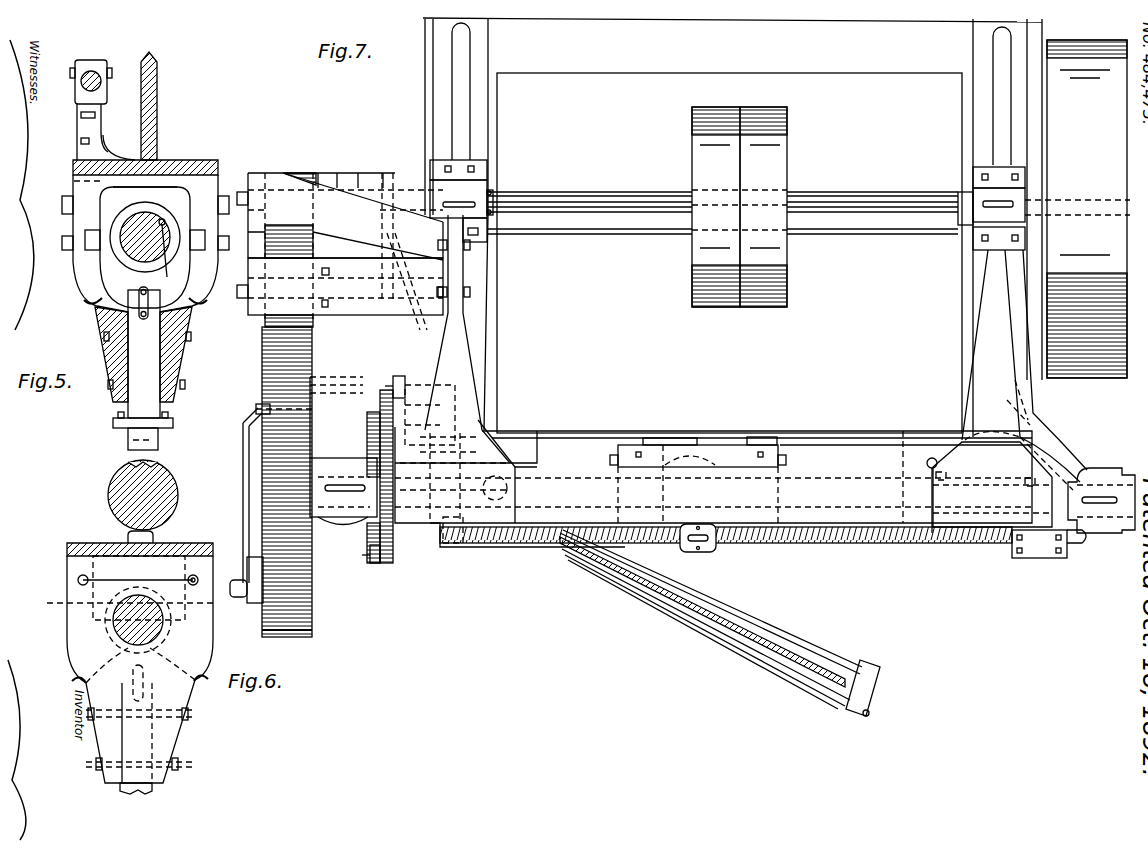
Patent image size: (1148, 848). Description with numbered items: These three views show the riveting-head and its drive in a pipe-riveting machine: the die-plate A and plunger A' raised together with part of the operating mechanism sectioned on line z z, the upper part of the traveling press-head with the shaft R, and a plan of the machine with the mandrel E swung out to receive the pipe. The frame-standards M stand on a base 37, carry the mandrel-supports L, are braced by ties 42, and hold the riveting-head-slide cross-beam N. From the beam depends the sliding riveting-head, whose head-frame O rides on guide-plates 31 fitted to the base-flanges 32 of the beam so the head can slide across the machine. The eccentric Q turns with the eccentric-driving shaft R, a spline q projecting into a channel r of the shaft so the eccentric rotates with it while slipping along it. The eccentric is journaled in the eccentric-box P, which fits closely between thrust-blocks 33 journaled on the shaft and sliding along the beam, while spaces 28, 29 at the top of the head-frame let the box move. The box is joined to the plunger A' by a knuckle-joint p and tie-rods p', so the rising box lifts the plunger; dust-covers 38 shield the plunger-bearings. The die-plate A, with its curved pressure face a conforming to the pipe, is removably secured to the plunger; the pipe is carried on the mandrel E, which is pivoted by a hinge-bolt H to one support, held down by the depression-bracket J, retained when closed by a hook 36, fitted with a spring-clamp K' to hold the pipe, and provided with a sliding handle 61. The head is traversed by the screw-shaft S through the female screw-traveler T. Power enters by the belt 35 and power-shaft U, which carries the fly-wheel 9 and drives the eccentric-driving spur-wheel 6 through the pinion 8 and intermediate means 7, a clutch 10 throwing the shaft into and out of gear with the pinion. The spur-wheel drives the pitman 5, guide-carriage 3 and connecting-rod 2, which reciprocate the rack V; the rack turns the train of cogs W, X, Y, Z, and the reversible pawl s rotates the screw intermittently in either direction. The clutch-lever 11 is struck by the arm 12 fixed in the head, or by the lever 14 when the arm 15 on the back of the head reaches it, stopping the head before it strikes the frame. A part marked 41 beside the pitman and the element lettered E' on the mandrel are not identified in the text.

In FIG. 5, the riveting-head-slide cross-beam N is at (158, 84).
In FIG. 6, the riveting-head-slide cross-beam N is at (148, 546).
In FIG. 7, the riveting-head-slide cross-beam N is at (830, 470).
In FIG. 5, the screw-shaft S is at (100, 68).
In FIG. 7, the screw-shaft S is at (883, 545).
In FIG. 5, the female screw-traveler T is at (102, 80).
In FIG. 7, the female screw-traveler T is at (732, 555).
In FIG. 5, the guide-plates 31 is at (158, 206).
In FIG. 7, the guide-plates 31 is at (712, 456).
In FIG. 5, the base-flanges 32 is at (167, 160).
In FIG. 6, the base-flanges 32 is at (117, 542).
In FIG. 5, the space 28 is at (87, 190).
In FIG. 5, the thrust-blocks 33 is at (115, 183).
In FIG. 6, the thrust-blocks 33 is at (173, 567).
In FIG. 5, the eccentric Q is at (153, 212).
In FIG. 6, the eccentric Q is at (122, 605).
In FIG. 5, the spline q is at (165, 222).
In FIG. 6, the spline q is at (225, 605).
In FIG. 5, the head-frame O is at (207, 358).
In FIG. 6, the head-frame O is at (140, 675).
In FIG. 5, the eccentric-driving shaft R is at (130, 243).
In FIG. 6, the eccentric-driving shaft R is at (138, 620).
In FIG. 7, the eccentric-driving shaft R is at (847, 545).
In FIG. 5, the eccentric-box P is at (145, 243).
In FIG. 6, the eccentric-box P is at (78, 580).
In FIG. 5, the knuckle-joint p is at (153, 302).
In FIG. 6, the knuckle-joint p is at (149, 680).
In FIG. 5, the tie-rods p' is at (116, 354).
In FIG. 6, the tie-rods p' is at (140, 665).
In FIG. 5, the dust-covers 38 is at (84, 298).
In FIG. 6, the dust-covers 38 is at (74, 681).
In FIG. 5, the channel r is at (170, 257).
In FIG. 5, the space 29 is at (196, 280).
In FIG. 5, the plunger A' is at (144, 354).
In FIG. 6, the plunger A' is at (187, 743).
In FIG. 5, the die-plate A is at (158, 427).
In FIG. 5, the pressure face a is at (158, 444).
In FIG. 5, the mandrel E is at (122, 495).
In FIG. 5, the bar E' is at (120, 448).
In FIG. 7, the bar E' is at (711, 619).
In FIG. 6, the ties 42 is at (198, 579).
In FIG. 7, the ties 42 is at (612, 458).
In FIG. 7, the base 37 is at (732, 227).
In FIG. 7, the frame-standards M is at (465, 328).
In FIG. 7, the power-shaft U is at (618, 195).
In FIG. 7, the belt 35 is at (700, 310).
In FIG. 7, the fly-wheel 9 is at (1087, 209).
In FIG. 7, the pinion 8 is at (302, 171).
In FIG. 7, the clutch 10 is at (367, 171).
In FIG. 7, the intermediate means 7 is at (263, 338).
In FIG. 7, the guide-carriage 3 is at (258, 410).
In FIG. 7, the pitman 5 is at (243, 497).
In FIG. 7, the bracket 41 is at (252, 600).
In FIG. 7, the eccentric-driving spur-wheel 6 is at (298, 638).
In FIG. 7, the connecting-rod 2 is at (330, 412).
In FIG. 7, the cog W is at (367, 443).
In FIG. 7, the cog Y is at (388, 563).
In FIG. 7, the cog Z is at (365, 527).
In FIG. 7, the reversible pawl s is at (367, 560).
In FIG. 7, the reciprocating rack V is at (395, 383).
In FIG. 7, the cog X is at (454, 440).
In FIG. 7, the clutch-lever 11 is at (412, 360).
In FIG. 7, the depression-bracket J is at (453, 543).
In FIG. 7, the mandrel-supports L is at (505, 443).
In FIG. 7, the hinge-bolt H is at (525, 432).
In FIG. 7, the section line z is at (713, 551).
In FIG. 7, the arm 12 is at (658, 438).
In FIG. 7, the arm 15 is at (753, 437).
In FIG. 7, the lever 14 is at (1009, 479).
In FIG. 7, the hook 36 is at (936, 494).
In FIG. 7, the spring-clamp K' is at (847, 698).
In FIG. 7, the sliding handle 61 is at (866, 716).